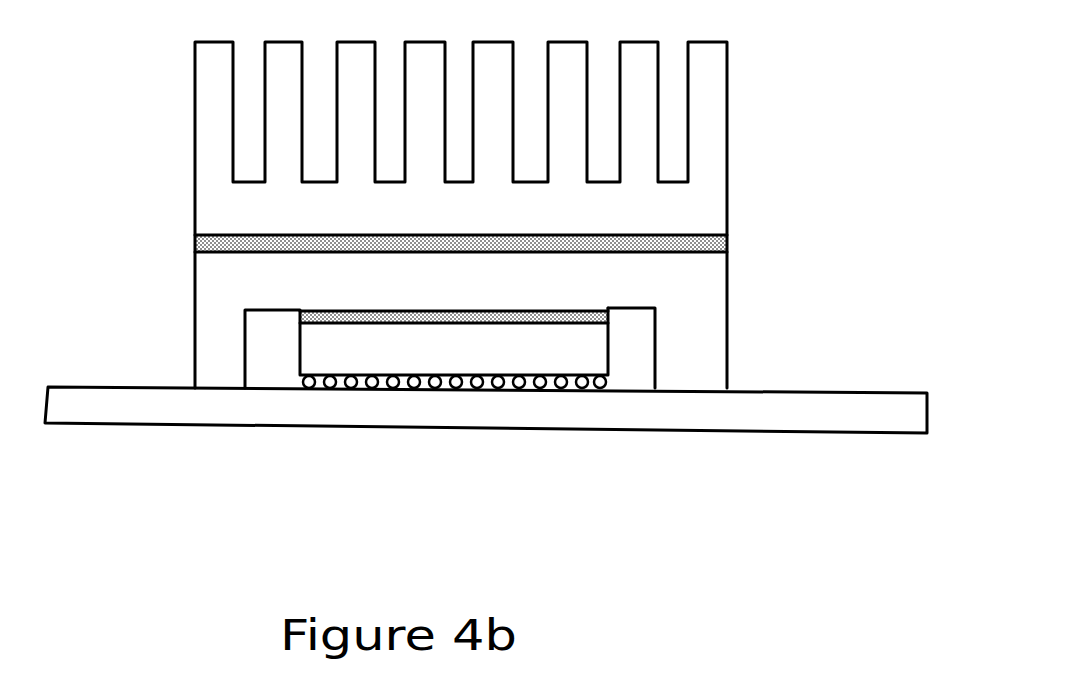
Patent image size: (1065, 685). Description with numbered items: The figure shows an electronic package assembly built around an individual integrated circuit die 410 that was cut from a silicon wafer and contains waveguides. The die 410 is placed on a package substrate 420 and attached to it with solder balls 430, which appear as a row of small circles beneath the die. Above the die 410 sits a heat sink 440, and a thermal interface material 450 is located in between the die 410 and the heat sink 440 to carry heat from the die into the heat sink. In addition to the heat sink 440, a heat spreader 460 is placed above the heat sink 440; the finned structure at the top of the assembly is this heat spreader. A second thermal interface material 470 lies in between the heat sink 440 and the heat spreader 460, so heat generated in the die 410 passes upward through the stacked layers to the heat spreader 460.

The die 410 is at (570, 352).
The package substrate 420 is at (773, 412).
The solder balls 430 is at (370, 393).
The heat sink 440 is at (226, 292).
The thermal interface material 450 is at (490, 306).
The heat spreader 460 is at (712, 148).
The thermal interface material 470 is at (727, 243).